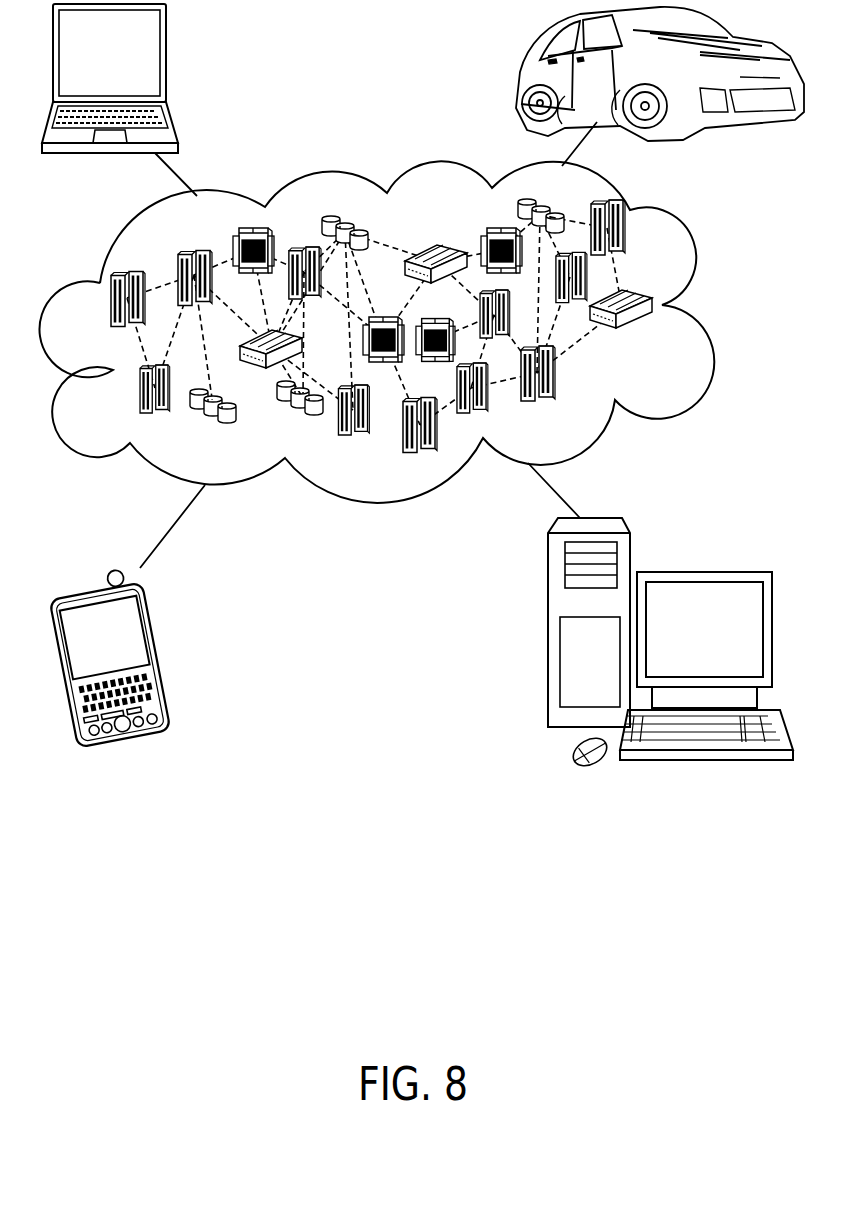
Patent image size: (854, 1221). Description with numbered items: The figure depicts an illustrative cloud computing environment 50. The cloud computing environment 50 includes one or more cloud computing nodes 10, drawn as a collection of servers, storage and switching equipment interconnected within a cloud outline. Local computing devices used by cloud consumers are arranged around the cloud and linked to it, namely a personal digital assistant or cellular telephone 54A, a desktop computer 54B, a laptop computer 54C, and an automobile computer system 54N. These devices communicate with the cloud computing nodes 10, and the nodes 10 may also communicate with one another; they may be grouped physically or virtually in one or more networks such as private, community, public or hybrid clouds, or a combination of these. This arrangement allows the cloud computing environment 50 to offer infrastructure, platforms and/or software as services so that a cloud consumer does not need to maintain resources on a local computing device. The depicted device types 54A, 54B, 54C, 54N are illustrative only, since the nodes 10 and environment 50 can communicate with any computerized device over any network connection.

The cloud computing node 10 is at (655, 338).
The cloud computing environment 50 is at (702, 308).
The personal digital assistant or cellular telephone 54A is at (163, 657).
The desktop computer 54B is at (705, 572).
The laptop computer 54C is at (167, 60).
The automobile computer system 54N is at (523, 74).